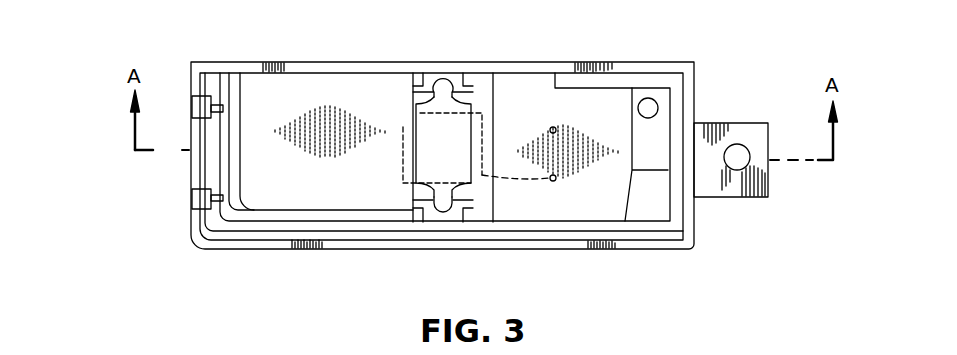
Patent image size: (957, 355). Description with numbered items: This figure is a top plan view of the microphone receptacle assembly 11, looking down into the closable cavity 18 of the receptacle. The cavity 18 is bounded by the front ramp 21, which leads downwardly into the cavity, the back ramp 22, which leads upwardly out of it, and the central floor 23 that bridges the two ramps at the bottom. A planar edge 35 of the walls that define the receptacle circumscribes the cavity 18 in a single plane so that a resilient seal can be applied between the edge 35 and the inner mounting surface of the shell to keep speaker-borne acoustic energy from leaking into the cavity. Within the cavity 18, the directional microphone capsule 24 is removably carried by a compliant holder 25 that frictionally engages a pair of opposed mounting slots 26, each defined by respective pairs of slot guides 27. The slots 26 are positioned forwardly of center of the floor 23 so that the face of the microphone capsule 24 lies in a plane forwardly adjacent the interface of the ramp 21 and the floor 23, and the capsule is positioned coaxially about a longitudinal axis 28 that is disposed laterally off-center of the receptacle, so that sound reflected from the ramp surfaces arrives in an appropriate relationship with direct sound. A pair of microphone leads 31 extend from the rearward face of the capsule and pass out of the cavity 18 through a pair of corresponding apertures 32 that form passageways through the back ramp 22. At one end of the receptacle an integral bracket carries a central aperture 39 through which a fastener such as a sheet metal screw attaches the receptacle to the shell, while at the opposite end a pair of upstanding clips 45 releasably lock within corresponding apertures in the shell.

The assembly 11 is at (734, 52).
The closable cavity 18 is at (297, 196).
The front ramp 21 is at (295, 88).
The back ramp 22 is at (602, 105).
The central floor 23 is at (483, 201).
The directional microphone capsule 24 is at (400, 126).
The compliant holder 25 is at (430, 128).
The mounting slots 26 is at (441, 81).
The slot guides 27 is at (412, 87).
The longitudinal axis 28 is at (798, 160).
The microphone leads 31 is at (550, 130).
The apertures 32 is at (556, 182).
The edge 35 is at (232, 67).
The aperture 39 is at (725, 170).
The upstanding clips 45 is at (192, 107).